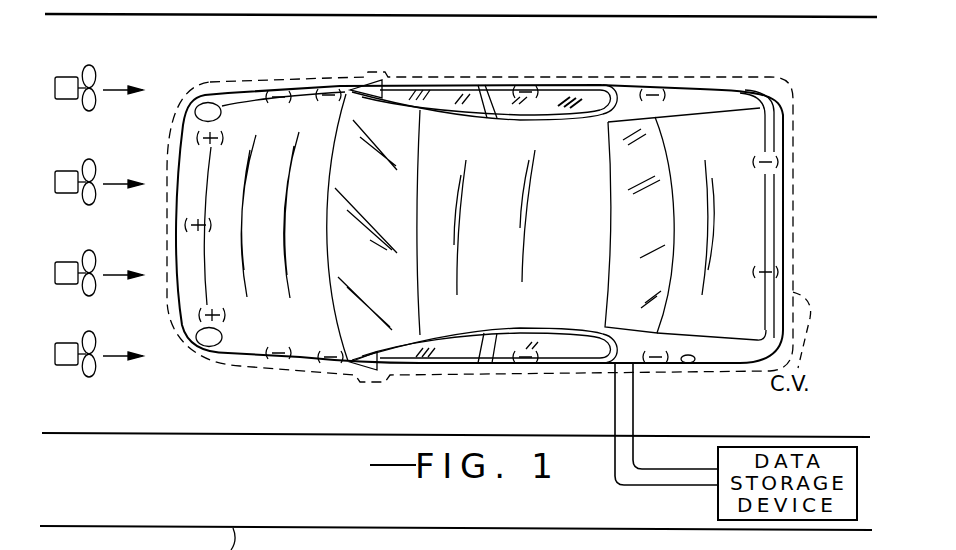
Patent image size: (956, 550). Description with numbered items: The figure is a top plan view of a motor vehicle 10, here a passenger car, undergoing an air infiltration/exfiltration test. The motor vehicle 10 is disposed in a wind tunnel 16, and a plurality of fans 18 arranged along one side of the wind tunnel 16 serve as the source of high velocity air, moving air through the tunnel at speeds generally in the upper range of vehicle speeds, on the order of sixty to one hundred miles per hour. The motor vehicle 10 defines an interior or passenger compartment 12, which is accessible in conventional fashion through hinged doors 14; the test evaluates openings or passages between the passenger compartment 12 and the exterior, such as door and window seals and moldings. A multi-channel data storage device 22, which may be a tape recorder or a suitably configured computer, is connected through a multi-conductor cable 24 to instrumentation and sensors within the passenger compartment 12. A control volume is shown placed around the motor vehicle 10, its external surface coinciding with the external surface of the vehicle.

The motor vehicle 10 is at (246, 362).
The passenger compartment 12 is at (500, 97).
The hinged doors 14 is at (496, 368).
The wind tunnel 16 is at (408, 17).
The fans 18 is at (97, 78).
The multi-channel data storage device 22 is at (718, 458).
The multi-conductor cable 24 is at (670, 492).